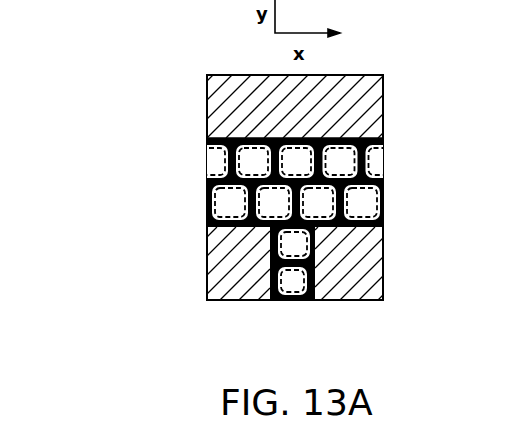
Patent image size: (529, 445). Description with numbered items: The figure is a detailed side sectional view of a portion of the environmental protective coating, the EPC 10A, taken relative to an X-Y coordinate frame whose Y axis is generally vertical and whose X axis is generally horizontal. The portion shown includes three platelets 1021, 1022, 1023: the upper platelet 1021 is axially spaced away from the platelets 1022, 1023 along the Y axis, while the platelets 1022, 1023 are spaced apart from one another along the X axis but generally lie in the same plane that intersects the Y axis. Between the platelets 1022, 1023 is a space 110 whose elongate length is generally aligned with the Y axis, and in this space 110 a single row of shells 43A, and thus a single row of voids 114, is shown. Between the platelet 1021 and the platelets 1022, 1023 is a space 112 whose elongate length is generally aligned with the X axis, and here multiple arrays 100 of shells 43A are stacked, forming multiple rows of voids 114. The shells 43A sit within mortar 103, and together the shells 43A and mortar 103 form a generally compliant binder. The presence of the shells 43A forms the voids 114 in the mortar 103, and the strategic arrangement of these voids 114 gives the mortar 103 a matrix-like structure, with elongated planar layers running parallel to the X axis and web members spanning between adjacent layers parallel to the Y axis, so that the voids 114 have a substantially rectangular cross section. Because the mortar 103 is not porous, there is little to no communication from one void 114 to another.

The EPC 10A is at (150, 82).
The platelet 1021 is at (384, 109).
The platelet 1022 is at (212, 255).
The platelet 1023 is at (382, 282).
The shell 43A is at (373, 160).
The mortar 103 is at (214, 149).
The void 114 is at (385, 228).
The array 100 is at (175, 175).
The space 112 is at (158, 187).
The space 110 is at (283, 307).